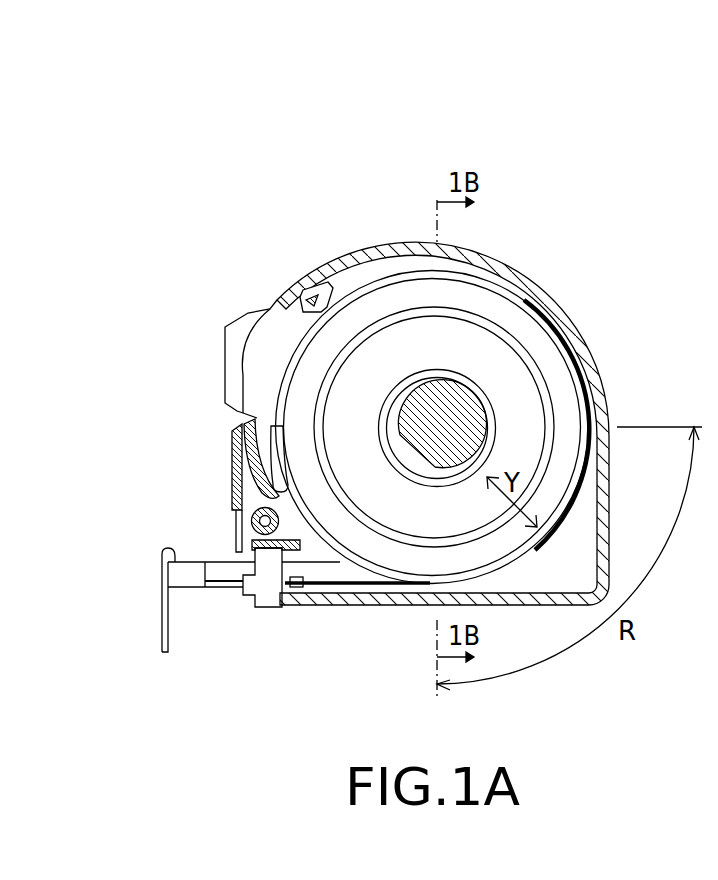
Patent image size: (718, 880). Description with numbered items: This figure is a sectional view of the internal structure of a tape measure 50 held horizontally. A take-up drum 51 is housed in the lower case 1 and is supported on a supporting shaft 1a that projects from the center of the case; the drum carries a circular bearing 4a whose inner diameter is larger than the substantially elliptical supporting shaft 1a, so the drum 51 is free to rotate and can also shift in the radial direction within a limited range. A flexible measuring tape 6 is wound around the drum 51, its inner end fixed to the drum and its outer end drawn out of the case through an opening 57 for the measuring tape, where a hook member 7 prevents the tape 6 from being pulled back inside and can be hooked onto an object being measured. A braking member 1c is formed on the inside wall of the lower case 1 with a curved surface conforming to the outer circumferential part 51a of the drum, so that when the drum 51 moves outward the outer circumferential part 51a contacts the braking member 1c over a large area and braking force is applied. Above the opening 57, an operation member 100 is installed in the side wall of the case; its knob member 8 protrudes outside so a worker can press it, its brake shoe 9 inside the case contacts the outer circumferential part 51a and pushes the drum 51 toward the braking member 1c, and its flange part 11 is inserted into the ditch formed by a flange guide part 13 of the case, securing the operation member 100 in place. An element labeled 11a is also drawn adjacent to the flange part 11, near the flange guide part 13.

The tape measure 50 is at (559, 208).
The lower case 1 is at (494, 260).
The supporting shaft 1a is at (462, 408).
The braking member 1c is at (527, 560).
The bearing 4a is at (401, 456).
The take-up drum 51 is at (552, 358).
The outer circumferential part 51a is at (397, 274).
The brake shoe 9 is at (326, 299).
The operation member 100 is at (244, 312).
The knob member 8 is at (236, 357).
The flange guide part 13 is at (255, 482).
The flange part 11 is at (272, 480).
The spring piece 11a is at (260, 430).
The opening for the measuring tape 57 is at (243, 560).
The measuring tape 6 is at (223, 587).
The hook member 7 is at (163, 620).